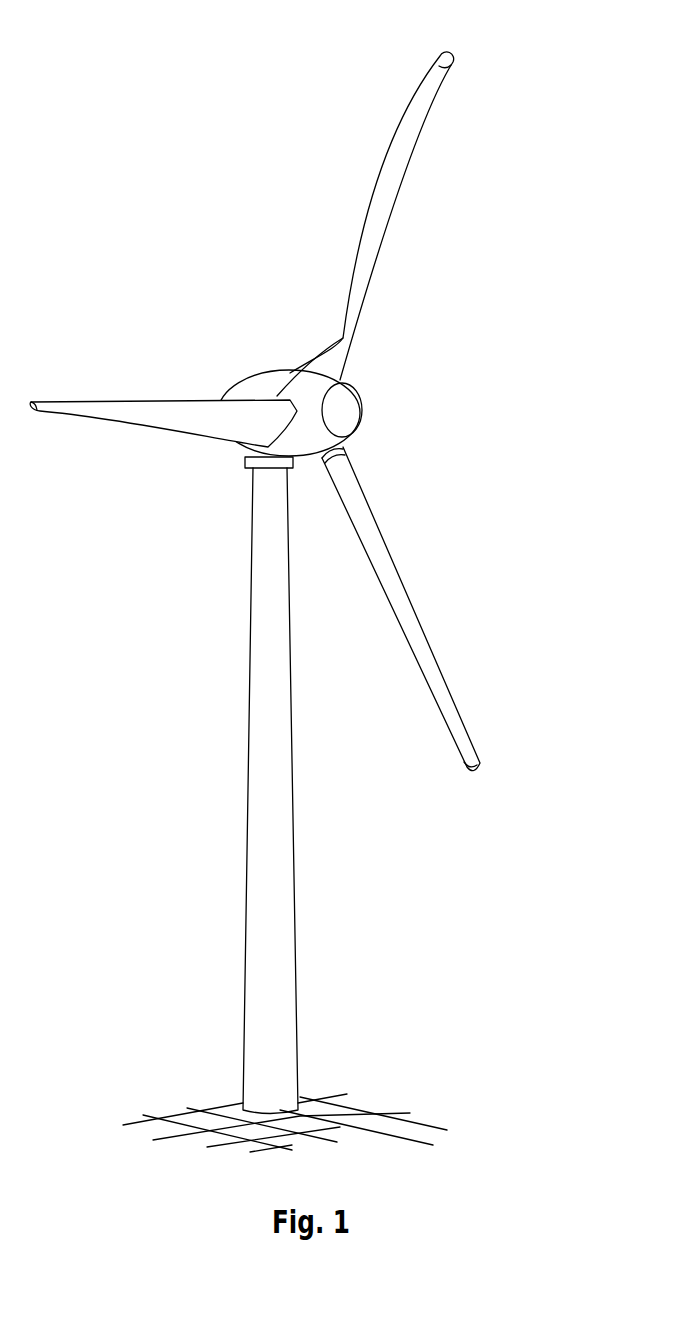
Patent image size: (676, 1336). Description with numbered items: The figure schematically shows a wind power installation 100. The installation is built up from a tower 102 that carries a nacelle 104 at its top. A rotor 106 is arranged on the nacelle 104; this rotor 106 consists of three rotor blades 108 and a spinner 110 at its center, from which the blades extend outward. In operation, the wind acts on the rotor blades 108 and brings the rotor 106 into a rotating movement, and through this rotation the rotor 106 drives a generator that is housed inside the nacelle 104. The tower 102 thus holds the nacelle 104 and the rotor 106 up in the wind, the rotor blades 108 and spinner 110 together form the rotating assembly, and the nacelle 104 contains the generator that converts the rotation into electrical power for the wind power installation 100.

The wind power installation 100 is at (202, 543).
The tower 102 is at (277, 892).
The nacelle 104 is at (265, 387).
The rotor 106 is at (432, 332).
The rotor blades 108 is at (98, 405).
The spinner 110 is at (347, 412).